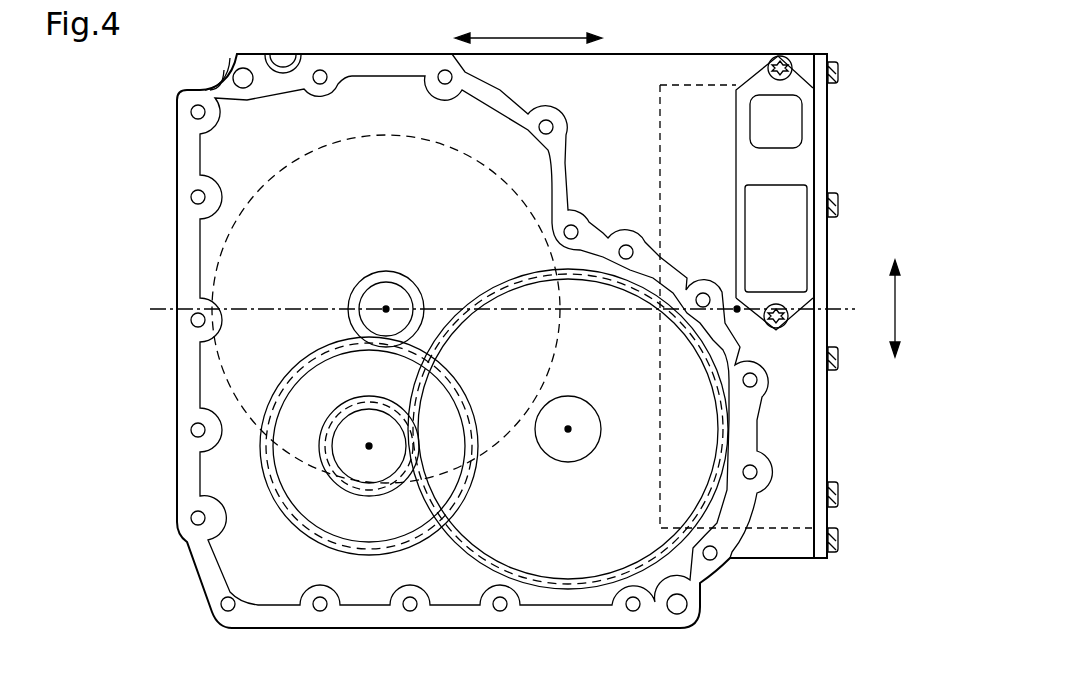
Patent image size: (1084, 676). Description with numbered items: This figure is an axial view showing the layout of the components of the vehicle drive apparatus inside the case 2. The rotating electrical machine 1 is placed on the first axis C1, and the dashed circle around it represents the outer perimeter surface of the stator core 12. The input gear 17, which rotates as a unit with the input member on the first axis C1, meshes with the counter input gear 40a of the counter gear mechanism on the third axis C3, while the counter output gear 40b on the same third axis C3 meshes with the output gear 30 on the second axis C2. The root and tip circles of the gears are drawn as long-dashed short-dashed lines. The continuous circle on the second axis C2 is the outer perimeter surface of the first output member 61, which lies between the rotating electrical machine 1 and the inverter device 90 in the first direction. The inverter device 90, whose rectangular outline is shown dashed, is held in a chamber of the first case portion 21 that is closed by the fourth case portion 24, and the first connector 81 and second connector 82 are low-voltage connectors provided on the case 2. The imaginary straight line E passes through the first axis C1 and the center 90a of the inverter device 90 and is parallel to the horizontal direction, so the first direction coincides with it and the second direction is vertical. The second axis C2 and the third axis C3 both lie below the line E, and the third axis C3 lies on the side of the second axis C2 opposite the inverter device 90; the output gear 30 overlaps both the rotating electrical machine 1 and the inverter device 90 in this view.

The rotating electrical machine 1 is at (270, 166).
The case 2 is at (168, 401).
The first case portion 21 is at (178, 255).
The fourth case portion 24 is at (828, 148).
The stator core 12 is at (255, 195).
The input gear 17 is at (366, 280).
The output gear 30 is at (457, 547).
The counter input gear 40a is at (343, 468).
The counter output gear 40b is at (340, 480).
The first output member 61 is at (593, 407).
The first connector 81 is at (765, 133).
The second connector 82 is at (765, 208).
The inverter device 90 is at (655, 160).
The center of inverter device 90a is at (737, 307).
The first axis C1 is at (386, 309).
The second axis C2 is at (568, 429).
The third axis C3 is at (369, 445).
The imaginary straight line E is at (494, 310).